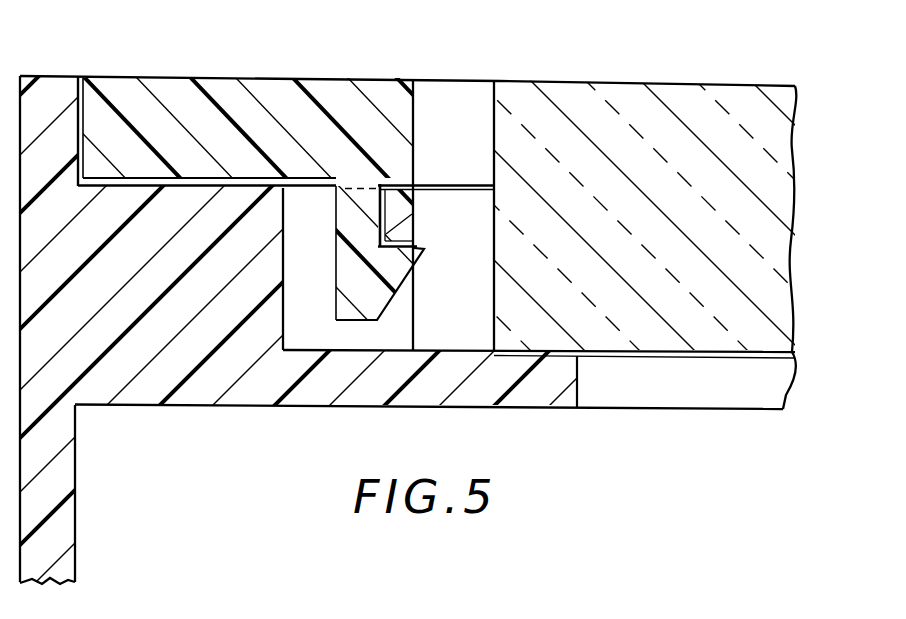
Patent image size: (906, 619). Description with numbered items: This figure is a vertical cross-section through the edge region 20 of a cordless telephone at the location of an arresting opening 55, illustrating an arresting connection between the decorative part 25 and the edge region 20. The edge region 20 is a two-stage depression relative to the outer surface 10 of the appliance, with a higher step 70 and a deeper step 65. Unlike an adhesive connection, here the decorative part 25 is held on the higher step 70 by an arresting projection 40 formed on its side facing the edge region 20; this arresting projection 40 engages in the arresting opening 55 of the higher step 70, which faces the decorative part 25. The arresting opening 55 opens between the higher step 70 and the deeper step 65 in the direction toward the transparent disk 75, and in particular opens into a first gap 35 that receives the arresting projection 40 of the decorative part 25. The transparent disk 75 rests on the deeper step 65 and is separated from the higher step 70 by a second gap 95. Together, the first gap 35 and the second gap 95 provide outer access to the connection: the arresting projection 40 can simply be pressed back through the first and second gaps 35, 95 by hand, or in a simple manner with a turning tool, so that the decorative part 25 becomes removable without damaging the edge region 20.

The outer surface 10 is at (63, 76).
The edge region 20 is at (293, 407).
The decorative part 25 is at (318, 87).
The first gap 35 is at (402, 323).
The arresting projection 40 is at (398, 265).
The arresting opening 55 is at (298, 263).
The deeper stage 65 is at (553, 388).
The higher stage 70 is at (175, 189).
The transparent disk 75 is at (740, 103).
The second gap 95 is at (472, 93).